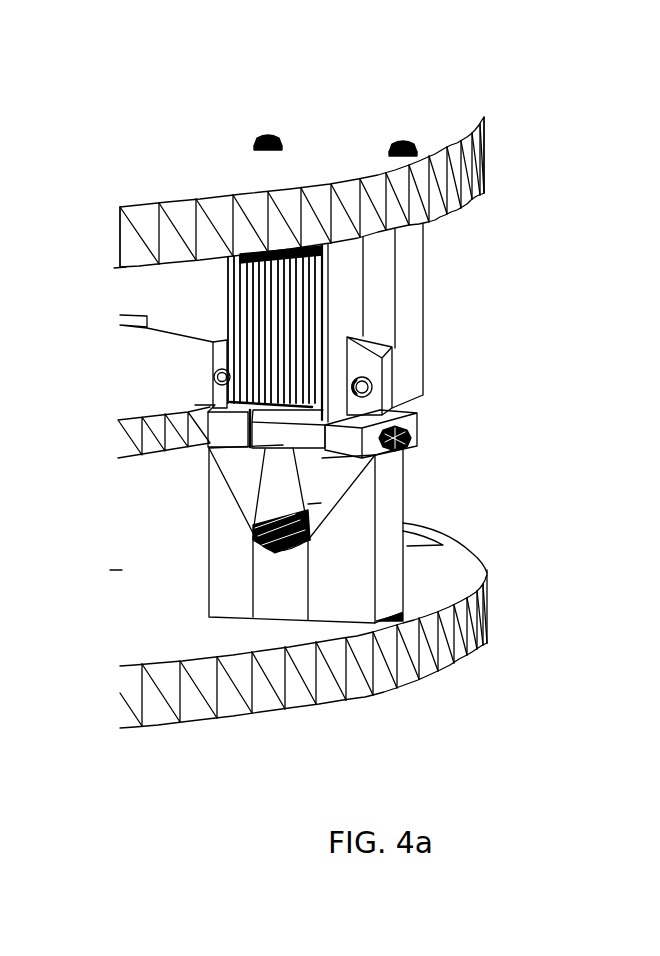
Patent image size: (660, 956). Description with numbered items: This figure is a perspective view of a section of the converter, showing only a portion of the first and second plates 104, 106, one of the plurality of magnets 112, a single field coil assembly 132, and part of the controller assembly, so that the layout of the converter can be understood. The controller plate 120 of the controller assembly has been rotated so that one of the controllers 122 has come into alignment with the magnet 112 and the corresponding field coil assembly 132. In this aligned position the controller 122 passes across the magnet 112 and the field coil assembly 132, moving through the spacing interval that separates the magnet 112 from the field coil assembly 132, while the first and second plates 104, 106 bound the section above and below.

The first plate 104 is at (473, 109).
The second plate 106 is at (452, 678).
The magnet 112 is at (264, 627).
The controller plate 120 is at (168, 458).
The controller 122 is at (427, 432).
The field coil assembly 132 is at (438, 307).